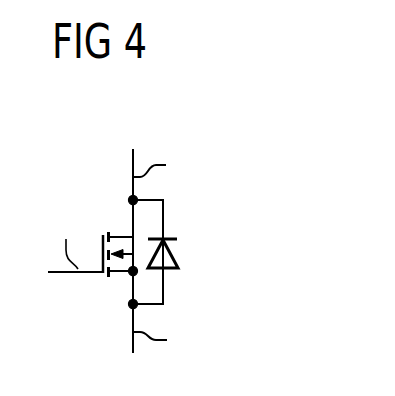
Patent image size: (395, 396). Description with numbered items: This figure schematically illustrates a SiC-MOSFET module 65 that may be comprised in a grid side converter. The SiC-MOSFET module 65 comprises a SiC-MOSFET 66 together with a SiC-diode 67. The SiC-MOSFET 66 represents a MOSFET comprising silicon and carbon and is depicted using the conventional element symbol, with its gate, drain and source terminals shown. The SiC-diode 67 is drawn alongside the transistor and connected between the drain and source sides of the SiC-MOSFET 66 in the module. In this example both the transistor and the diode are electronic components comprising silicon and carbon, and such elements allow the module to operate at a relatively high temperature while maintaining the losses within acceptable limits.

The SiC-MOSFET module 65 is at (262, 133).
The SiC-MOSFET 66 is at (107, 230).
The SiC-diode 67 is at (174, 254).